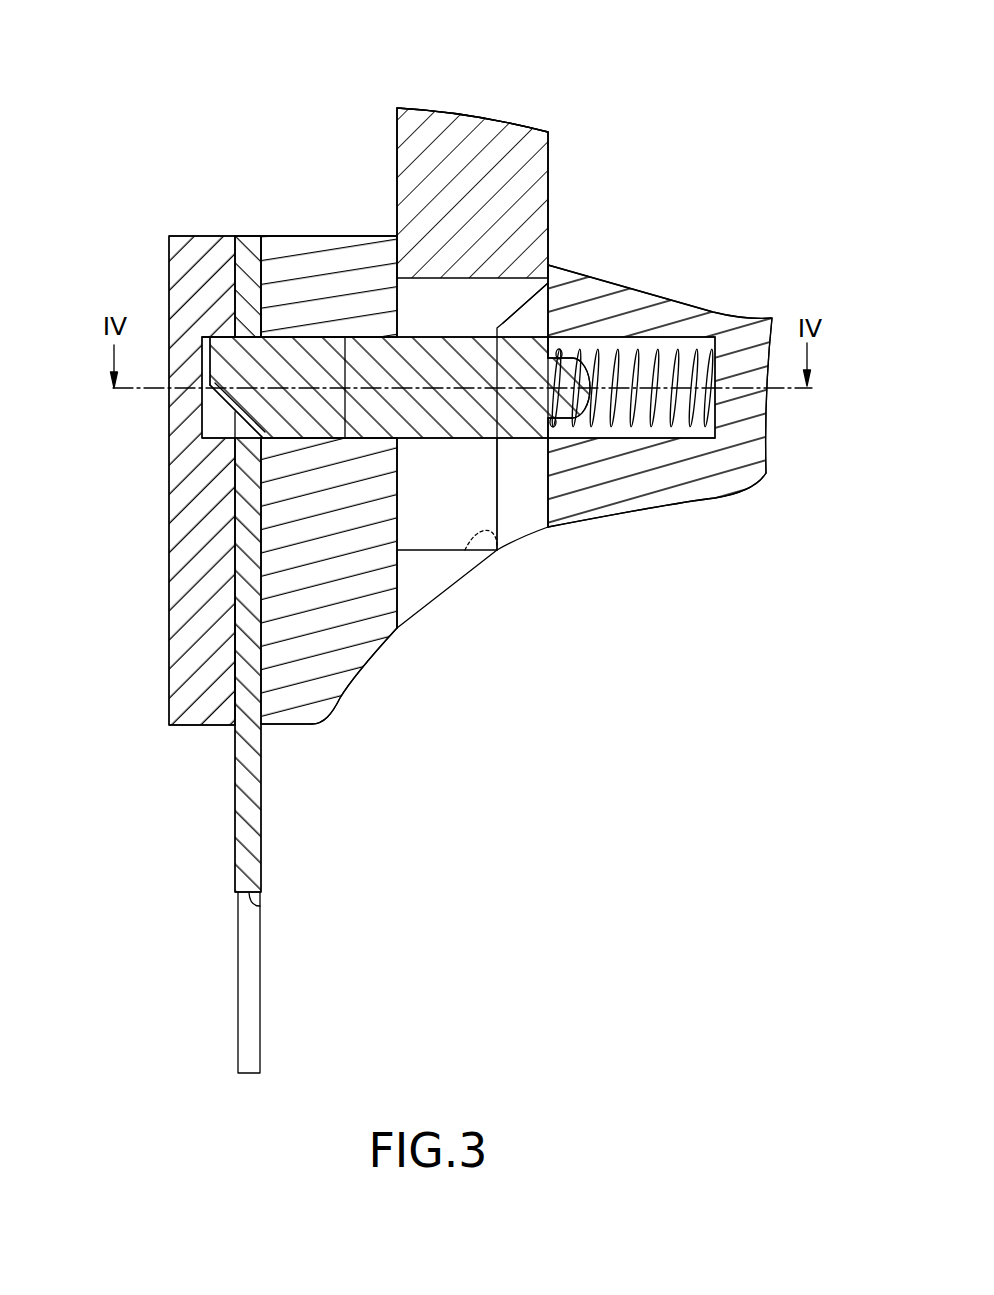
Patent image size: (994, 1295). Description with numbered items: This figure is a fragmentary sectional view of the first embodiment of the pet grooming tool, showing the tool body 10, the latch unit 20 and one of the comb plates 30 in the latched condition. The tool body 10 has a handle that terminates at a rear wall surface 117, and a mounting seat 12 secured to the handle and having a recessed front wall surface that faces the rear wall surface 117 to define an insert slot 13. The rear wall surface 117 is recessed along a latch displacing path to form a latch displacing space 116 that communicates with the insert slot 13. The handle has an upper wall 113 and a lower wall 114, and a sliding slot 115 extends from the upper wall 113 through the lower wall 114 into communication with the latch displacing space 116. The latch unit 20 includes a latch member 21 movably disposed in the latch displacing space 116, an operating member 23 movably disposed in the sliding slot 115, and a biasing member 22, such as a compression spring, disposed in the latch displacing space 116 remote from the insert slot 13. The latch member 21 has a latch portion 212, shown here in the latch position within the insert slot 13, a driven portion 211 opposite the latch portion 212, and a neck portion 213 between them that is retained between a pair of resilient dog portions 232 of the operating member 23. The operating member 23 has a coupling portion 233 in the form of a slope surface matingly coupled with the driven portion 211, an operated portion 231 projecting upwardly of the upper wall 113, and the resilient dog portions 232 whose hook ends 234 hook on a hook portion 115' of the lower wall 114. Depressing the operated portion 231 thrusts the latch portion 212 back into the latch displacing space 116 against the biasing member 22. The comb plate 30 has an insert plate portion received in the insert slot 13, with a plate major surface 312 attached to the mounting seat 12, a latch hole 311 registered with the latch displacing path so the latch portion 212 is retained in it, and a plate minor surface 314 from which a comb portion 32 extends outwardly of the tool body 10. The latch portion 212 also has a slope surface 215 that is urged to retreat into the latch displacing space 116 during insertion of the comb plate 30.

The tool body 10 is at (563, 447).
The mounting seat 12 is at (183, 500).
The insert slot 13 is at (215, 452).
The latch unit 20 is at (464, 275).
The latch member 21 is at (401, 309).
The biasing member 22 is at (663, 363).
The operating member 23 is at (437, 127).
The comb plate 30 is at (258, 529).
The comb portion 32 is at (248, 975).
The upper wall 113 is at (332, 236).
The lower wall 114 is at (372, 654).
The sliding slot 115 is at (554, 250).
The hook portion 115' is at (502, 600).
The latch displacing space 116 is at (285, 338).
The rear wall surface 117 is at (262, 633).
The driven portion 211 is at (551, 302).
The latch portion 212 is at (230, 353).
The neck portion 213 is at (417, 357).
The slope surface 215 is at (212, 400).
The operated portion 231 is at (488, 122).
The resilient dog portions 232 is at (487, 468).
The coupling portion 233 is at (513, 300).
The hook ends 234 is at (434, 573).
The latch hole 311 is at (222, 338).
The plate major surface 312 is at (238, 662).
The plate minor surface 314 is at (253, 900).